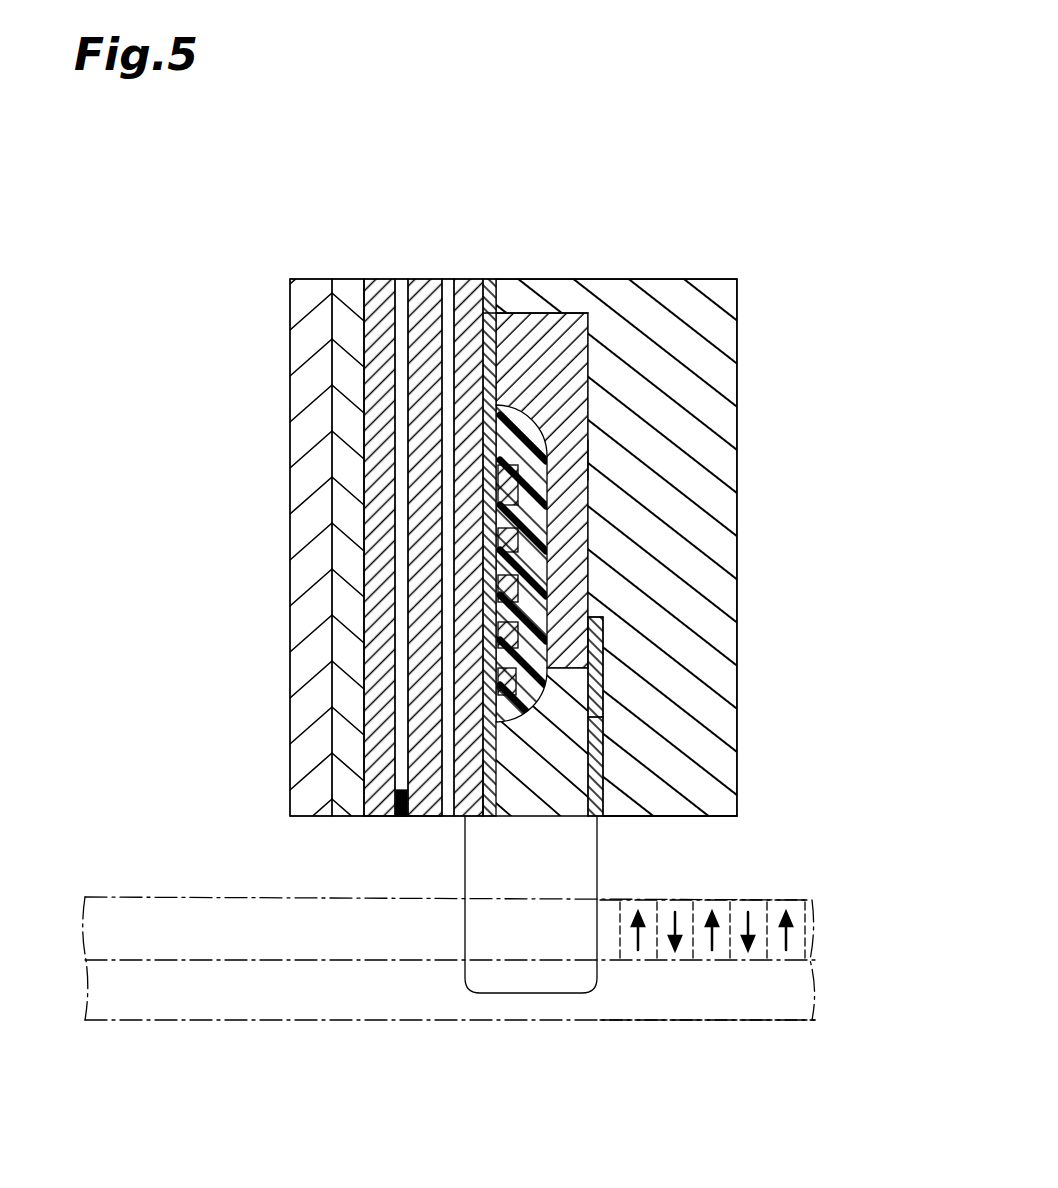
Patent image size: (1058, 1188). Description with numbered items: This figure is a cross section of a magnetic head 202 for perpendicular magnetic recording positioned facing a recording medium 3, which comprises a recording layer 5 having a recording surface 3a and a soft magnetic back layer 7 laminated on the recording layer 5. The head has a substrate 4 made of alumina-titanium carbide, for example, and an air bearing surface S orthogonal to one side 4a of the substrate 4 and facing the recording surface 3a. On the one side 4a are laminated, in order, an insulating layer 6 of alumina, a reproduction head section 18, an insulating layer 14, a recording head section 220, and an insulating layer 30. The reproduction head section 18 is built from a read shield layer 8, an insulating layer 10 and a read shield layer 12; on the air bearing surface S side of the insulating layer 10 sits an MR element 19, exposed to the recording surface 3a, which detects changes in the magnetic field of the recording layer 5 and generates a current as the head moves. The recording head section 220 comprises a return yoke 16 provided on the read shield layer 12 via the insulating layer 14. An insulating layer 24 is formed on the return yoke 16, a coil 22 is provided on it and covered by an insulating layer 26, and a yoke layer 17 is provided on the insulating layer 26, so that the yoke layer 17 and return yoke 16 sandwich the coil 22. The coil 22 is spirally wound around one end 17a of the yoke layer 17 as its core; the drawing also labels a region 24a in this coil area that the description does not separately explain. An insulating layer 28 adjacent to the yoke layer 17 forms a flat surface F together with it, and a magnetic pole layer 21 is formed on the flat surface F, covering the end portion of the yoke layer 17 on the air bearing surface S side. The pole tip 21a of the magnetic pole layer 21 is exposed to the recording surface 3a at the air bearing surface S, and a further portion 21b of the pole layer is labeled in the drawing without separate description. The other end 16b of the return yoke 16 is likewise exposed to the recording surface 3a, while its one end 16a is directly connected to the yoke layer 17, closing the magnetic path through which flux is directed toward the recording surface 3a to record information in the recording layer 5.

The magnetic head for perpendicular magnetic recording 202 is at (803, 195).
The substrate 4 is at (300, 345).
The one side of the substrate 4a is at (340, 279).
The insulating layer 6 is at (354, 279).
The read shield layer 8 is at (372, 279).
The insulating layer 10 is at (401, 279).
The read shield layer 12 is at (416, 279).
The insulating layer 14 is at (448, 279).
The return yoke 16 is at (467, 279).
The one end of the return yoke 16a is at (494, 279).
The other end of the return yoke 16b is at (446, 816).
The yoke layer 17 is at (555, 352).
The one end of the yoke layer 17a is at (532, 313).
The reproduction head section 18 is at (364, 822).
The MR element 19 is at (400, 803).
The magnetic pole layer 21 is at (830, 708).
The pole tip 21a is at (604, 763).
The yoke portion 21b is at (604, 713).
The coil 22 is at (500, 590).
The insulating layer 24 is at (502, 640).
The coil accommodating opening 24a is at (488, 406).
The insulating layer 26 is at (505, 676).
The insulating layer 28 is at (508, 745).
The insulating layer 30 is at (696, 292).
The recording head section 220 is at (598, 822).
The flat surface F is at (588, 461).
The air bearing surface S is at (675, 817).
The recording medium 3 is at (890, 925).
The recording surface 3a is at (752, 900).
The recording layer 5 is at (815, 937).
The soft magnetic back layer 7 is at (812, 985).